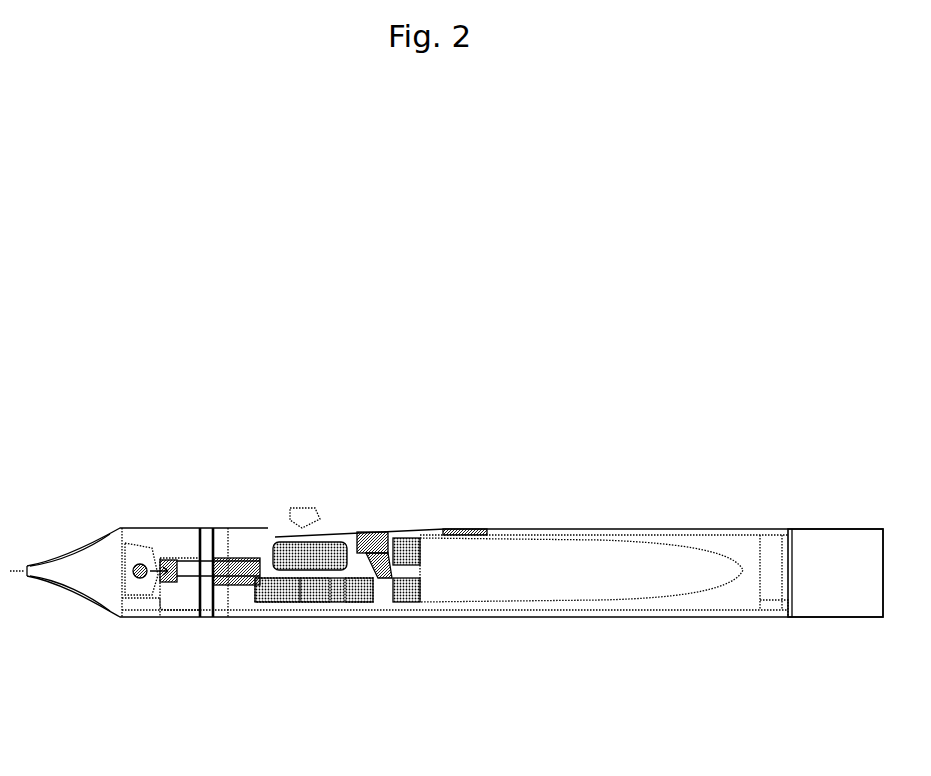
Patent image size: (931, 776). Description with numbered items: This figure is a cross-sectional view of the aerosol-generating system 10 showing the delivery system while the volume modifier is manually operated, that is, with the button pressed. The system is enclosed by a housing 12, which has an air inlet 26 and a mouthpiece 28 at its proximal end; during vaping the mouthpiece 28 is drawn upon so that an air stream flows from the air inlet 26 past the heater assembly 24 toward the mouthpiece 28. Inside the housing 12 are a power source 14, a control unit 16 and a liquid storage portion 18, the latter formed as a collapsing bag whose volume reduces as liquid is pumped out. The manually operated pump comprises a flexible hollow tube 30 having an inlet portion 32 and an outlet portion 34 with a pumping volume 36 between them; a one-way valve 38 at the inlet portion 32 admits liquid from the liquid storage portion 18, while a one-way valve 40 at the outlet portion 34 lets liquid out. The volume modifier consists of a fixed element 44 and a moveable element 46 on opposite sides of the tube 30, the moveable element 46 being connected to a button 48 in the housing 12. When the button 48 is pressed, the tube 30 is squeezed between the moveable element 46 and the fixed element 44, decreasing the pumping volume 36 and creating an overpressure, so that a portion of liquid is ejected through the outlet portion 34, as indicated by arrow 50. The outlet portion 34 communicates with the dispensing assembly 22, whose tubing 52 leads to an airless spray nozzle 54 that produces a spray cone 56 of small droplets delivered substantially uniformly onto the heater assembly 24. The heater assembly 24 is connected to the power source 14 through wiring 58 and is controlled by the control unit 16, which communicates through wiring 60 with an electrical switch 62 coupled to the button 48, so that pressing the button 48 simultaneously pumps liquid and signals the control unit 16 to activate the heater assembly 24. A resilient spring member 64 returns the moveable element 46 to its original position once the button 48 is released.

The aerosol-generating system 10 is at (521, 342).
The housing 12 is at (686, 618).
The power source 14 is at (833, 530).
The control unit 16 is at (778, 530).
The liquid storage portion 18 is at (647, 530).
The dispensing assembly 22 is at (228, 528).
The heater assembly 24 is at (138, 618).
The air inlet 26 is at (210, 528).
The mouthpiece 28 is at (50, 528).
The flexible hollow tube 30 is at (327, 618).
The inlet portion 32 is at (390, 618).
The outlet portion 34 is at (253, 618).
The pumping volume 36 is at (298, 618).
The one-way valve 38 is at (392, 531).
The one-way valve 40 is at (258, 528).
The fixed element 44 is at (350, 618).
The moveable element 46 is at (327, 540).
The button 48 is at (286, 534).
The arrow 50 is at (270, 618).
The tubing 52 is at (210, 618).
The spray nozzle 54 is at (178, 528).
The spray cone 56 is at (162, 618).
The wiring 58 is at (745, 618).
The wiring 60 is at (746, 530).
The electrical switch 62 is at (452, 530).
The resilient spring member 64 is at (373, 531).